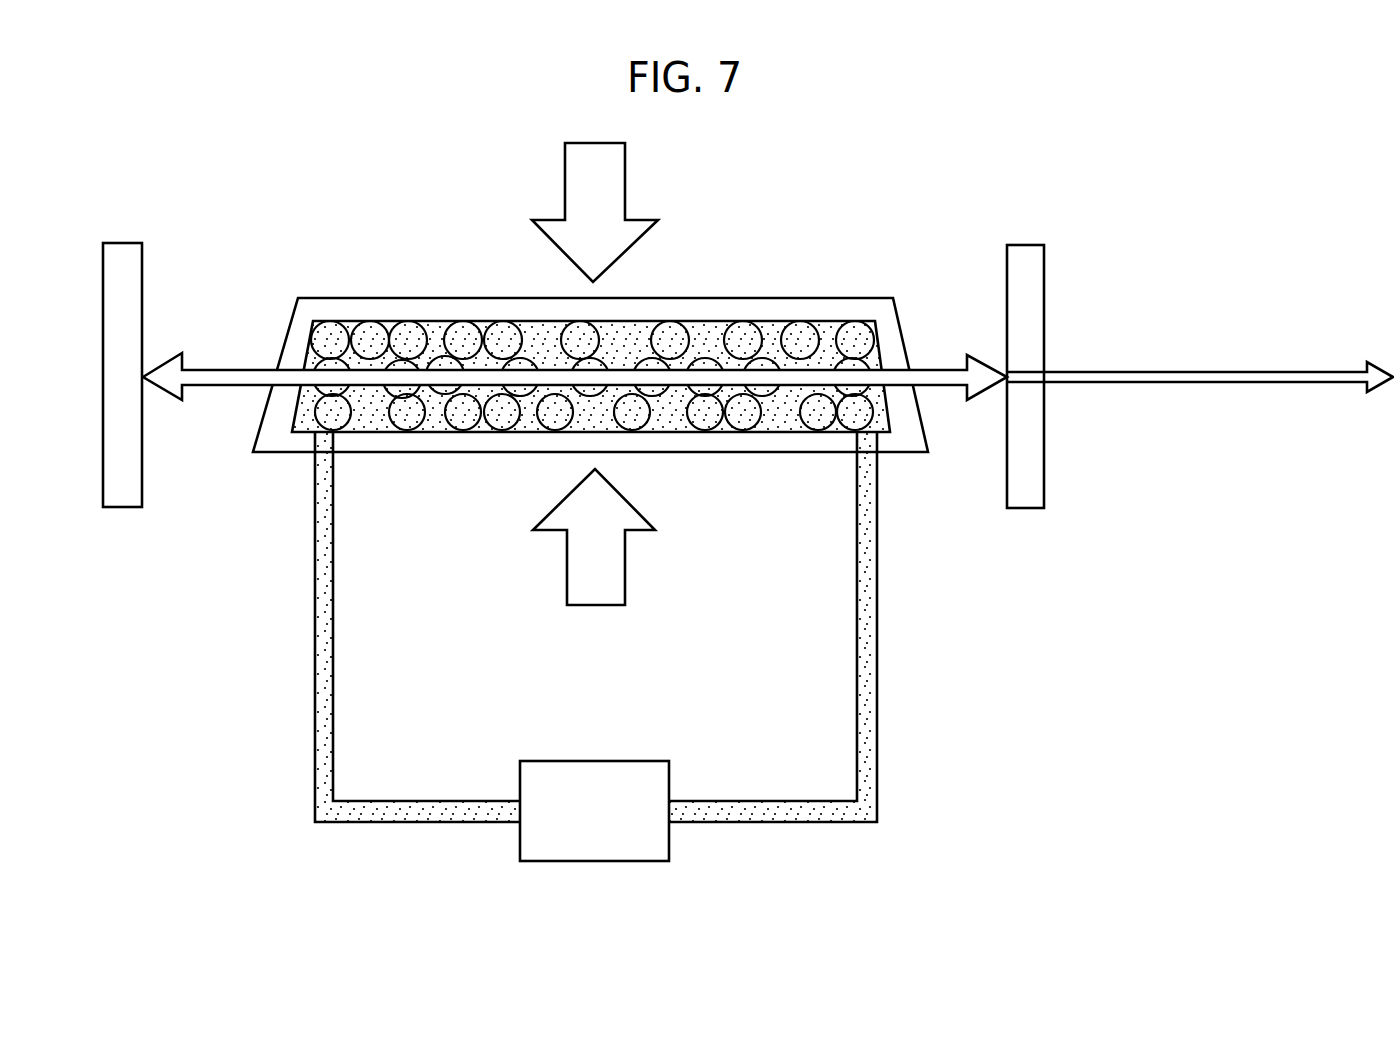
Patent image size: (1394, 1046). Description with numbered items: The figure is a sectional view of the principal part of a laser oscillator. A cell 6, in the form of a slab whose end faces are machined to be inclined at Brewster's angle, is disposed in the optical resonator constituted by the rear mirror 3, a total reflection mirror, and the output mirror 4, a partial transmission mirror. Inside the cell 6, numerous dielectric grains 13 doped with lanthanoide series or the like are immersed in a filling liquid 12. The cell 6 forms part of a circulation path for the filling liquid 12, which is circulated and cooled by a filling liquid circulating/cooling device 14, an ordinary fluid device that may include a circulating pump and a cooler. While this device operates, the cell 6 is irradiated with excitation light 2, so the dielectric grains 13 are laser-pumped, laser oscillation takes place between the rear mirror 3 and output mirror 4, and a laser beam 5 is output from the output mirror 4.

The excitation light 2 is at (612, 203).
The rear mirror 3 is at (122, 262).
The output mirror 4 is at (1027, 262).
The laser beam 5 is at (1160, 383).
The cell 6 is at (307, 297).
The filling liquid 12 is at (372, 403).
The dielectric grains 13 is at (865, 412).
The filling liquid circulating/cooling device 14 is at (663, 844).